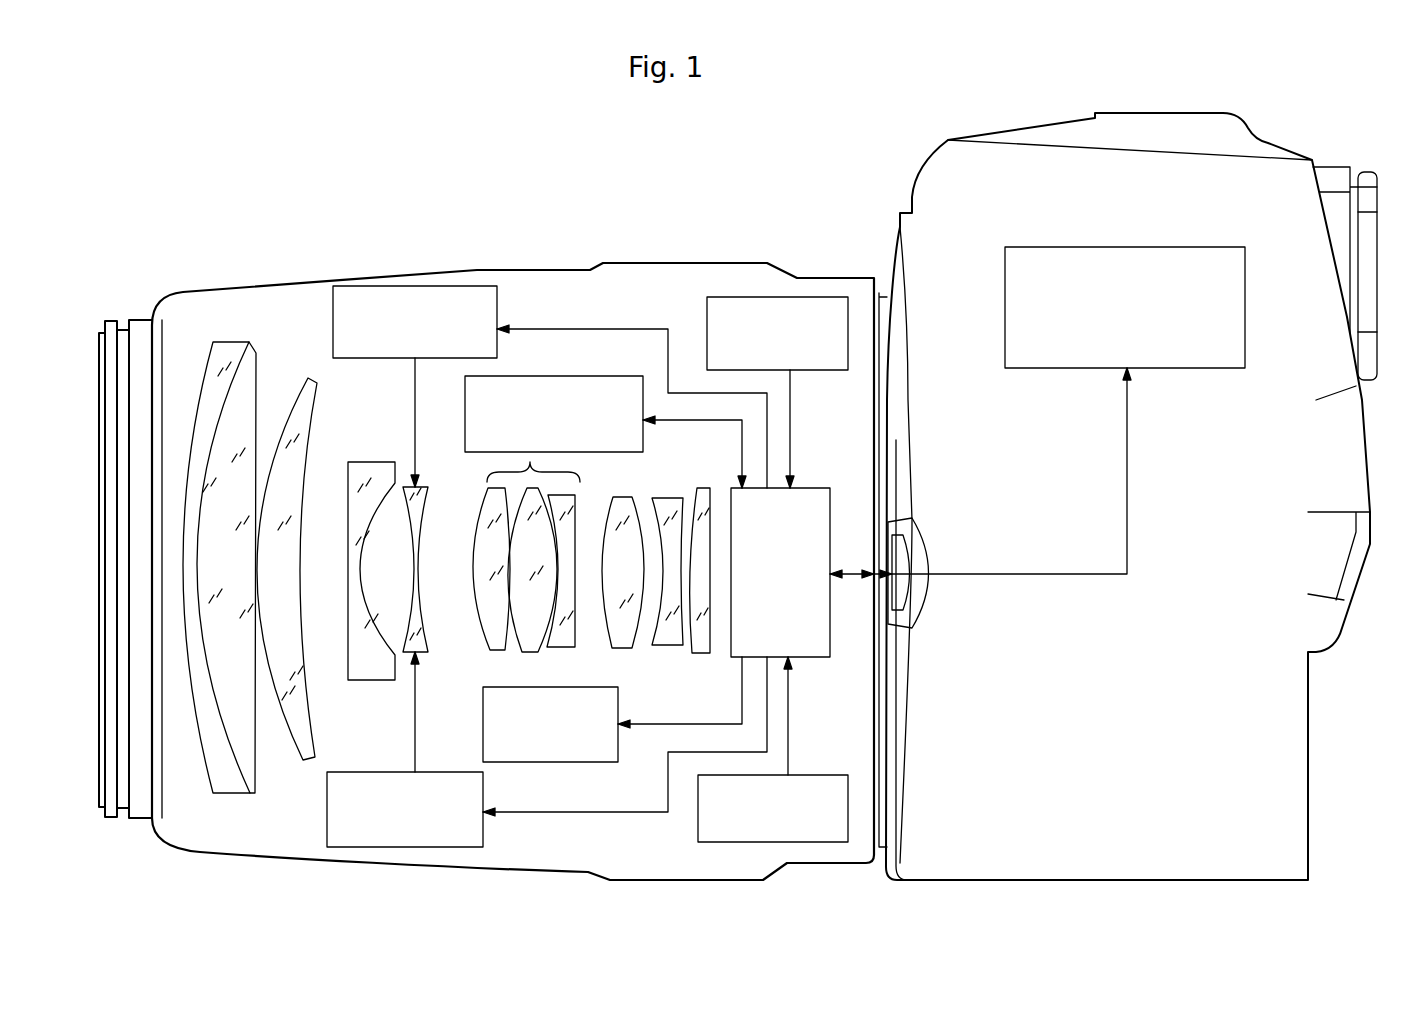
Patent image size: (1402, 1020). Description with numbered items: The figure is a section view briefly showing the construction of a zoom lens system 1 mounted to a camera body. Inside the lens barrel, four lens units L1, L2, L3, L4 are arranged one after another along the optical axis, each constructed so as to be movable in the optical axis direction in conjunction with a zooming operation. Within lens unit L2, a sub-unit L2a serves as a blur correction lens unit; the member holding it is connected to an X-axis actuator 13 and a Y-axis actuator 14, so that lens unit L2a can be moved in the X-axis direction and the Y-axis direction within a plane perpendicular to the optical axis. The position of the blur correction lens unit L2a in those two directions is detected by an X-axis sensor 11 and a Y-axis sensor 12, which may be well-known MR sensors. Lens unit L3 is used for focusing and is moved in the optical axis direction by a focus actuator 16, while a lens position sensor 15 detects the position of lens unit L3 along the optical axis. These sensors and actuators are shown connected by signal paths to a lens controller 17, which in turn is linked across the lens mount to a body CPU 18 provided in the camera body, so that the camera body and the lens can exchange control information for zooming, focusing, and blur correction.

The zoom lens system 1 is at (752, 230).
The X-axis sensor 11 is at (830, 297).
The Y-axis sensor 12 is at (732, 842).
The X-axis actuator 13 is at (468, 286).
The Y-axis actuator 14 is at (430, 847).
The lens position sensor 15 is at (575, 376).
The focus actuator 16 is at (568, 762).
The lens controller 17 is at (830, 620).
The body CPU 18 is at (1005, 247).
The lens unit L1 is at (198, 800).
The lens unit L2 is at (430, 690).
The blur correction lens unit L2a is at (428, 507).
The lens unit L3 is at (575, 657).
The lens unit L4 is at (708, 655).